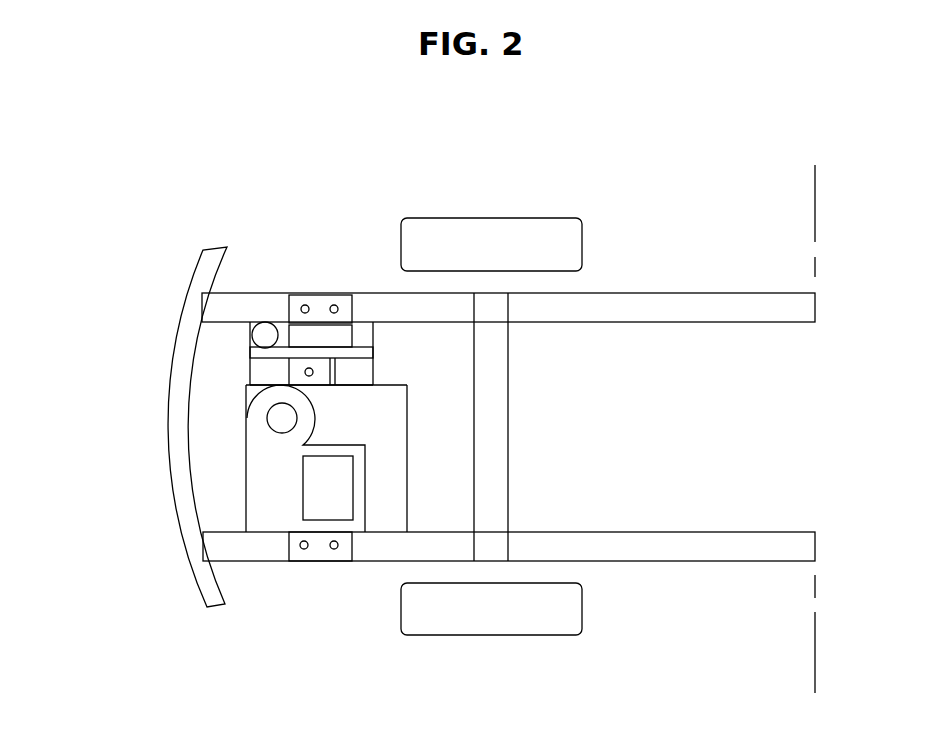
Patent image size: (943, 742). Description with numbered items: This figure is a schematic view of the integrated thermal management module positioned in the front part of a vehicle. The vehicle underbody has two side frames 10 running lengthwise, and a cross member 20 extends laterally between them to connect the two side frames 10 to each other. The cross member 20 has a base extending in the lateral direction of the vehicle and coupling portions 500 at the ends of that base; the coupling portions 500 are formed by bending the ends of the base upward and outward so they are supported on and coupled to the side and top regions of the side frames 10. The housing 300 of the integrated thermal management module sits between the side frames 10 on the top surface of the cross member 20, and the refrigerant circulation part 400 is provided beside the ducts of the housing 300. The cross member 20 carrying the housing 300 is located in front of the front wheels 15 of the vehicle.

The side frame 10 is at (656, 307).
The wheel 15 is at (494, 237).
The cross member 20 is at (321, 550).
The housing 300 is at (258, 467).
The refrigerant circulation part 400 is at (258, 369).
The coupling portion 500 is at (290, 542).